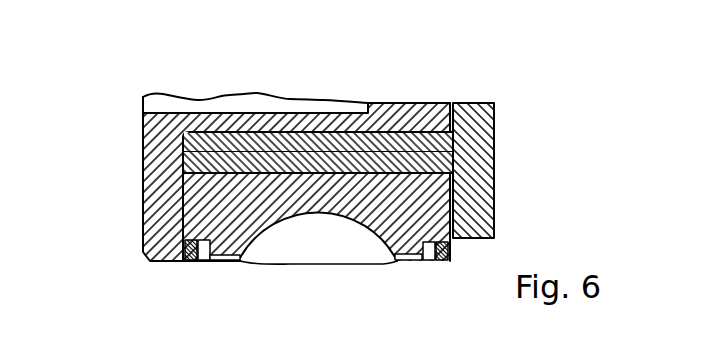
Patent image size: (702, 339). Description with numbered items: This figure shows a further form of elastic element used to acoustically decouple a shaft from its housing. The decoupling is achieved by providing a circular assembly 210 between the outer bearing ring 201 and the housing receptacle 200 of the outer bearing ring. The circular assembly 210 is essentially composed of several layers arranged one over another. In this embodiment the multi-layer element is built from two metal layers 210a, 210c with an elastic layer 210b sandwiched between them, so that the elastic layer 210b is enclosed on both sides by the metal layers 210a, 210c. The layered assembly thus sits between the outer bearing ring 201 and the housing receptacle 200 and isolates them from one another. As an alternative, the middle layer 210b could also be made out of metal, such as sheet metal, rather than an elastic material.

The housing receptacle 200 is at (155, 203).
The outer bearing ring 201 is at (230, 243).
The circular assembly 210 is at (386, 135).
The metal layer 210a is at (225, 152).
The elastic layer 210b is at (494, 152).
The metal layer 210c is at (397, 140).